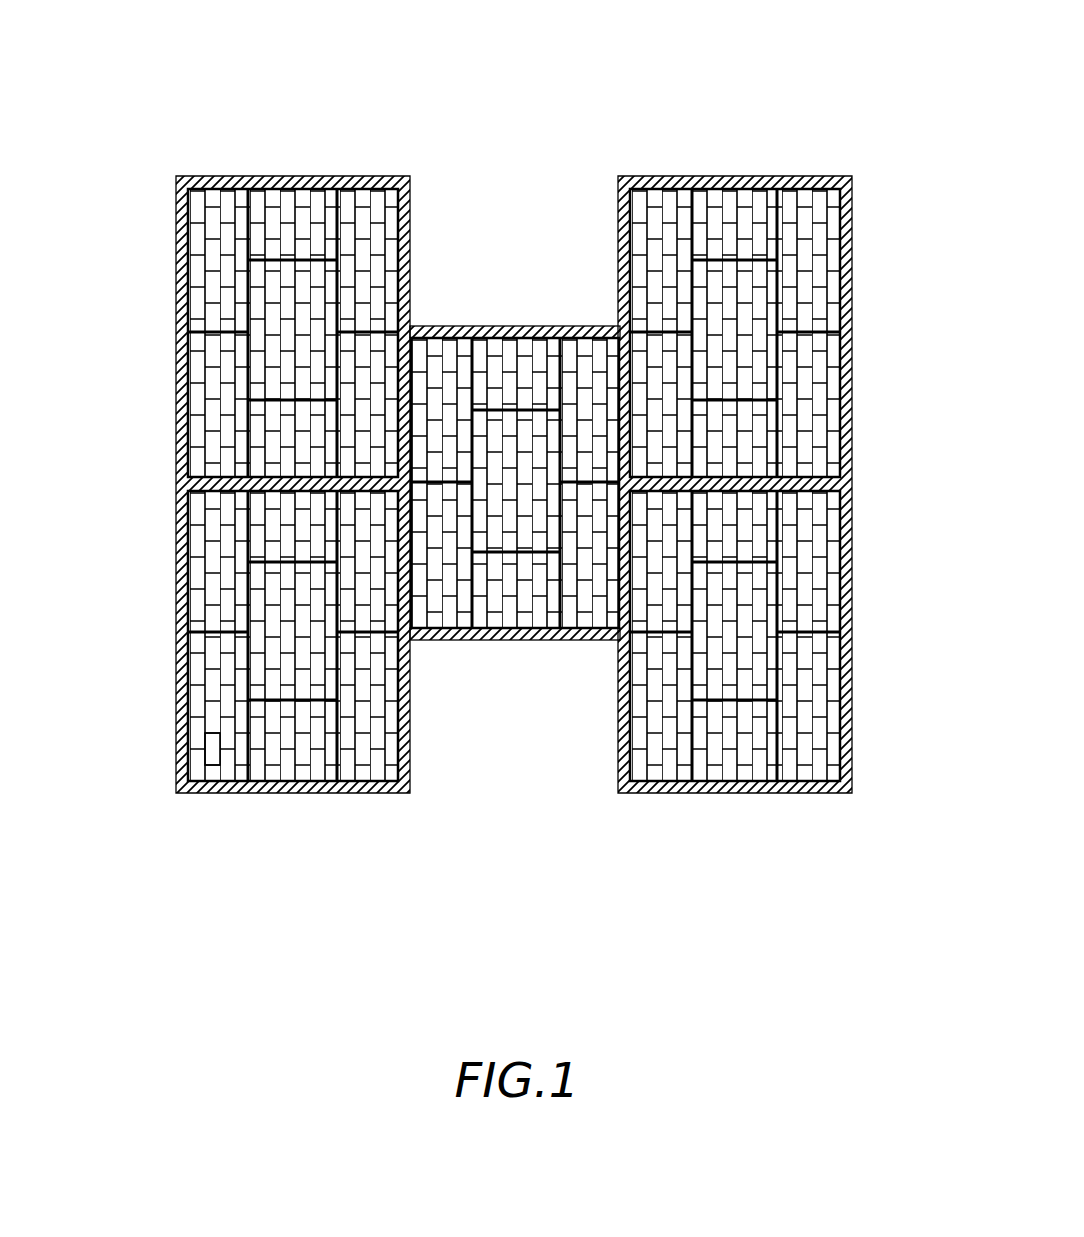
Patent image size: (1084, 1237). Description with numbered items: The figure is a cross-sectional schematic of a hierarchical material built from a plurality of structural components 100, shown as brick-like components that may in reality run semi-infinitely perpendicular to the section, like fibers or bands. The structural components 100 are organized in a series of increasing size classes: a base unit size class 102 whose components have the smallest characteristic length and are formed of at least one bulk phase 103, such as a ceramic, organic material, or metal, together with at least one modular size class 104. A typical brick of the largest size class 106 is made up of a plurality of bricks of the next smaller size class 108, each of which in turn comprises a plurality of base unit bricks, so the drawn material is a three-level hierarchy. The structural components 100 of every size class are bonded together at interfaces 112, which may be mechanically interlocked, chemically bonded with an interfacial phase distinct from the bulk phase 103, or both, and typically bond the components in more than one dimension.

The structural components 100 is at (209, 143).
The base unit size class 102 is at (373, 758).
The bulk phase 103 is at (218, 748).
The modular size class 104 is at (177, 442).
The largest size class 106 is at (810, 178).
The next smaller size class 108 is at (877, 330).
The interfaces 112 is at (286, 212).